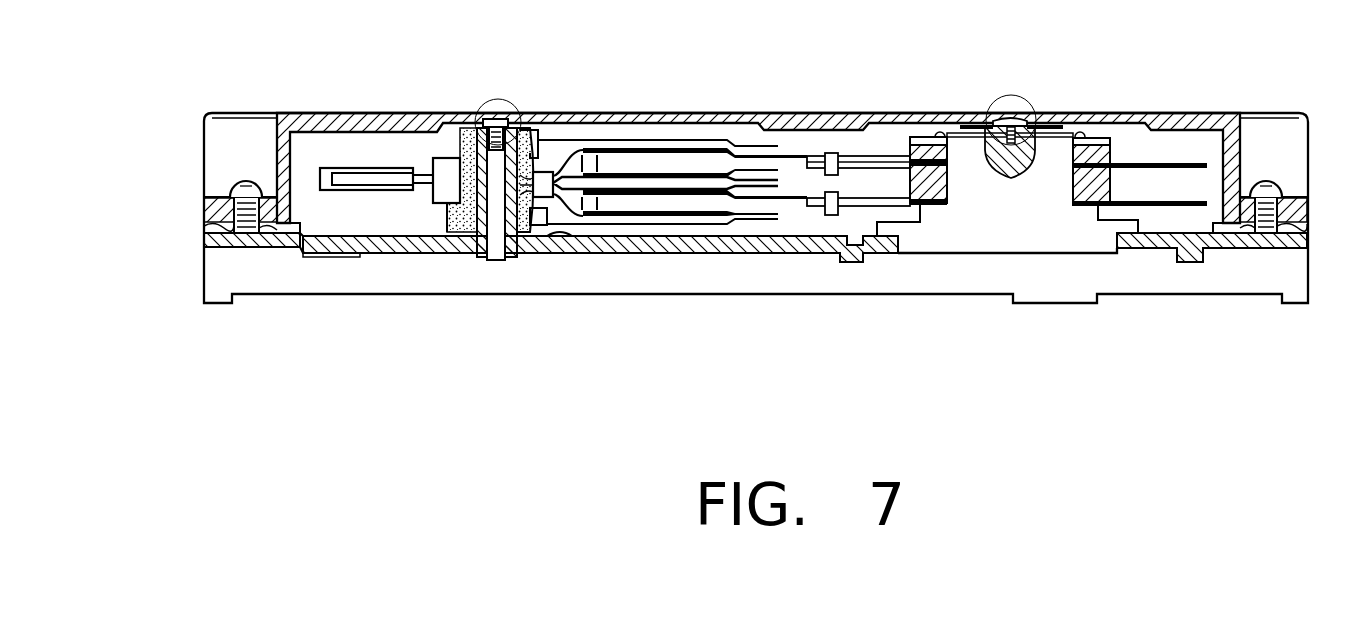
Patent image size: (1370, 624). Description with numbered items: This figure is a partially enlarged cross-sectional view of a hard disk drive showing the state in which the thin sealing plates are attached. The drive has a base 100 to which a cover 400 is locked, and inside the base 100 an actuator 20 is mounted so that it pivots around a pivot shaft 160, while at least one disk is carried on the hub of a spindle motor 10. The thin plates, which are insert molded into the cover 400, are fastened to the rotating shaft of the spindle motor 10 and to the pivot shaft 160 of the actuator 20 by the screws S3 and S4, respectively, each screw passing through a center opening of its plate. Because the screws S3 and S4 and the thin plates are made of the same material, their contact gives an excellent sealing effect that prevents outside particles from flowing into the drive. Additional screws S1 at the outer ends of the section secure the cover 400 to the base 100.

The base 100 is at (753, 302).
The cover 400 is at (449, 121).
The screw S1 is at (244, 181).
The actuator 20 is at (406, 148).
The screw S4 is at (497, 117).
The pivot shaft 160 is at (543, 40).
The spindle motor 10 is at (1060, 157).
The screw S3 is at (1068, 40).